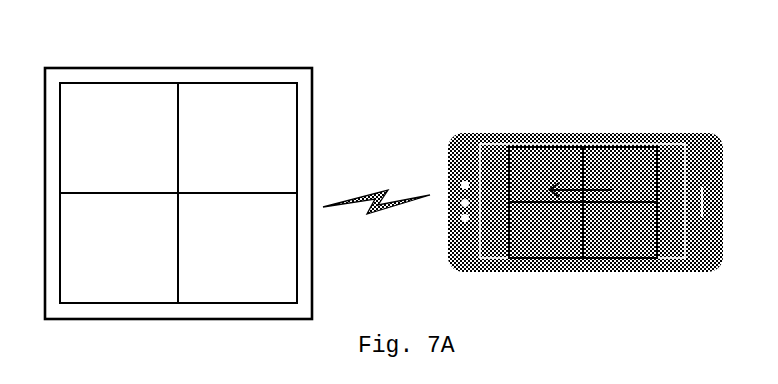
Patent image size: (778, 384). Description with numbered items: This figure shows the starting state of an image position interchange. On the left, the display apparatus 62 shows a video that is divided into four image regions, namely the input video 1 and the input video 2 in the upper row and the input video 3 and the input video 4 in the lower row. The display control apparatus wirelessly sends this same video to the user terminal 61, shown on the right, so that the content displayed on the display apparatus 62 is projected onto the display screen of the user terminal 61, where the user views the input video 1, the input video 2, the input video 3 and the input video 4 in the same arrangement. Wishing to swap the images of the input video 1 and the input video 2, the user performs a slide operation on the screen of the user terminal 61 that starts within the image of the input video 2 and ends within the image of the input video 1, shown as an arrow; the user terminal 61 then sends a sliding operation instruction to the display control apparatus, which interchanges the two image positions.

The user terminal 61 is at (582, 135).
The display apparatus 62 is at (177, 67).
The input video 1 is at (119, 138).
The input video 2 is at (237, 138).
The input video 3 is at (119, 248).
The input video 4 is at (237, 248).